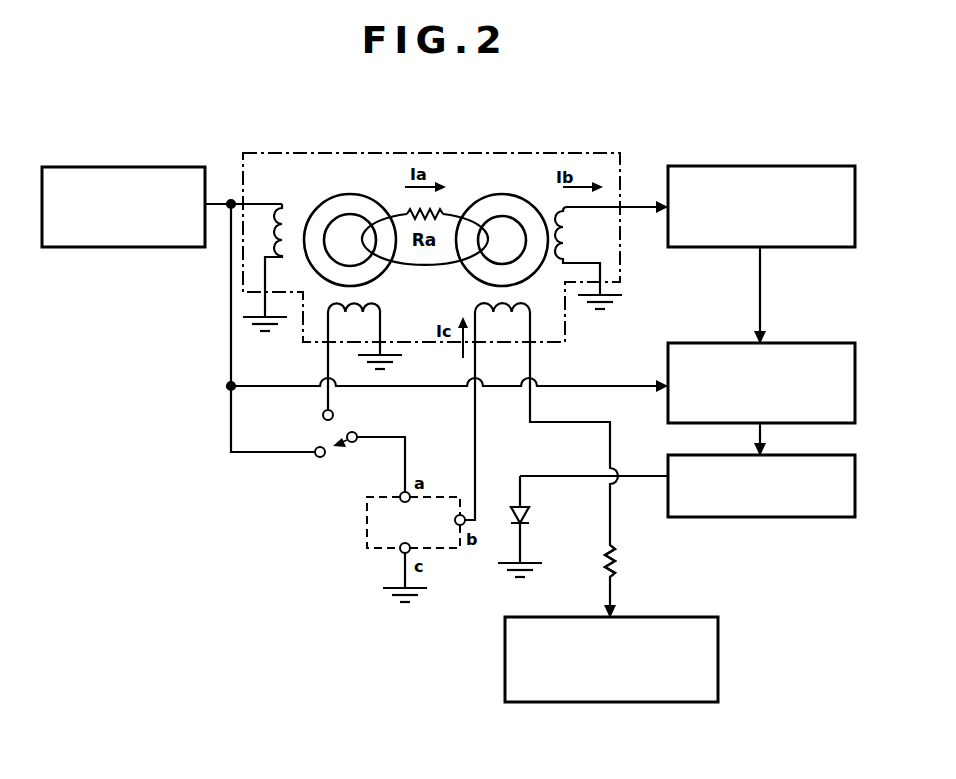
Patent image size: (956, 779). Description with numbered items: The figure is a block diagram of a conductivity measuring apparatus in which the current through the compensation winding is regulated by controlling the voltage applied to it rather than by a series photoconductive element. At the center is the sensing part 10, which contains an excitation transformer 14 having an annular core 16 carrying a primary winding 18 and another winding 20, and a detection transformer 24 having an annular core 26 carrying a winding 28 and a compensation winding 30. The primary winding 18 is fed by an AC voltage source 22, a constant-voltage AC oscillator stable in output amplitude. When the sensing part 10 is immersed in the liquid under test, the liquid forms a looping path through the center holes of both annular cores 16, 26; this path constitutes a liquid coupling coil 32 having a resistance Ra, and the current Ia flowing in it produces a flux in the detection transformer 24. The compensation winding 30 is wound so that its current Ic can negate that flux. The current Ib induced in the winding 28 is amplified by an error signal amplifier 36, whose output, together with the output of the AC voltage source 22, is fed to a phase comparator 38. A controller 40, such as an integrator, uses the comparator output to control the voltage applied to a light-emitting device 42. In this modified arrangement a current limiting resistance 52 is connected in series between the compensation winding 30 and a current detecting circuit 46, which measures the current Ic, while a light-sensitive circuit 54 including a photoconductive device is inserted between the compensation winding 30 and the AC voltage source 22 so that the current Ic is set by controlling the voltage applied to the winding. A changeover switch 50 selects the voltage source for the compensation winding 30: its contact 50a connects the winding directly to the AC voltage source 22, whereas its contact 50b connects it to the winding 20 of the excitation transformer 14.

The sensing part 10 is at (612, 152).
The excitation transformer 14 is at (358, 178).
The annular core 16 is at (326, 209).
The primary winding 18 is at (290, 206).
The winding 20 is at (332, 314).
The AC voltage source 22 is at (122, 167).
The detection transformer 24 is at (538, 182).
The annular core 26 is at (492, 205).
The winding 28 is at (565, 234).
The compensation winding 30 is at (515, 316).
The liquid coupling coil 32 is at (424, 266).
The error signal amplifier 36 is at (761, 166).
The phase comparator 38 is at (803, 342).
The controller 40 is at (804, 517).
The light-emitting device 42 is at (532, 510).
The current detecting circuit 46 is at (718, 658).
The changeover switch 50 is at (346, 447).
The contact 50a is at (316, 455).
The contact 50b is at (321, 415).
The current limiting resistance 52 is at (617, 559).
The light-sensitive circuit 54 is at (367, 535).